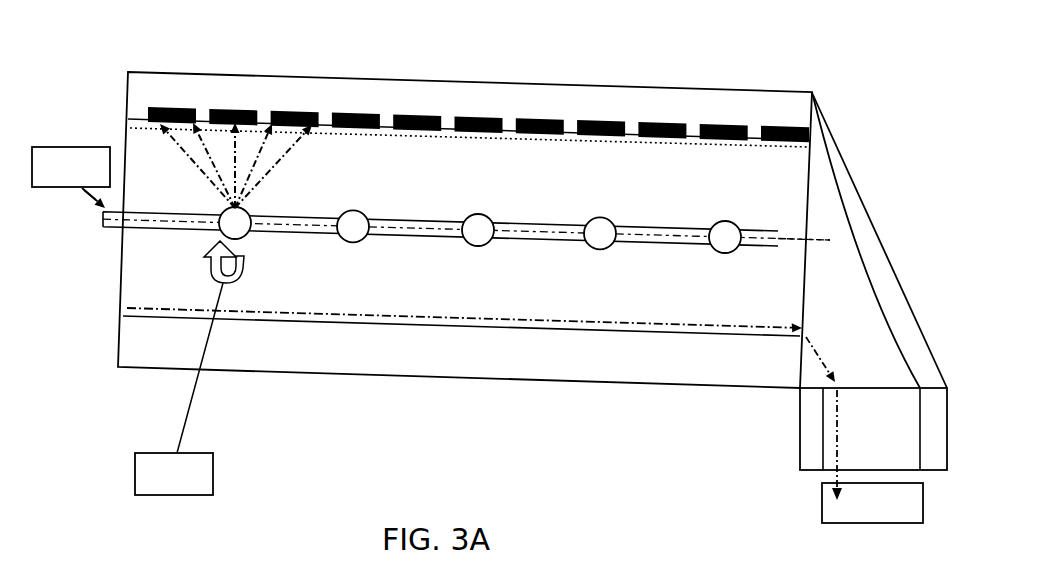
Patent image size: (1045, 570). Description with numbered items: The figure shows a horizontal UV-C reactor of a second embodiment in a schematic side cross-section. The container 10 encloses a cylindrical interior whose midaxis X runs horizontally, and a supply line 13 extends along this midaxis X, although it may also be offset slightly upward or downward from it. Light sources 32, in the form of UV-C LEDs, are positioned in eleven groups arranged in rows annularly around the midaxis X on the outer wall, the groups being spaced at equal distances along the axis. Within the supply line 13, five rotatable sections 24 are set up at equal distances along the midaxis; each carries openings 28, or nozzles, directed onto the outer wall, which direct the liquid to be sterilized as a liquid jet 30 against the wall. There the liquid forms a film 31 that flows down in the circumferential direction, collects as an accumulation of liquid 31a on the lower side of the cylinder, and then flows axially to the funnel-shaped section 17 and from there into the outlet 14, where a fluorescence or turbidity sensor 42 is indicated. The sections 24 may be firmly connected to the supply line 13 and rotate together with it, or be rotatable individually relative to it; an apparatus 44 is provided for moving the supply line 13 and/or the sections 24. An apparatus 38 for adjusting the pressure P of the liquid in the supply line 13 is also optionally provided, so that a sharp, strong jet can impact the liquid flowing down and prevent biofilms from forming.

The container 10 is at (618, 83).
The supply line 13 is at (510, 222).
The outlet 14 is at (872, 437).
The funnel-shaped section of the interior 17 is at (835, 272).
The rotatable section of the supply line 24 is at (250, 237).
The opening for liquid jet, nozzle 28 is at (257, 207).
The liquid jet 30 is at (192, 162).
The liquid film flowing down 31 is at (705, 145).
The accumulation of liquid flowing down 31a is at (573, 322).
The light sources, UV-C LEDs 32 is at (422, 117).
The apparatus for adjusting the pressure of the liquid in the supply line 38 is at (86, 145).
The fluorescence or turbidity sensor 42 is at (822, 503).
The apparatus for moving the supply line or the rotatable section thereof 44 is at (135, 470).
The pressure generated in the liquid P is at (88, 195).
The midaxis X is at (643, 243).